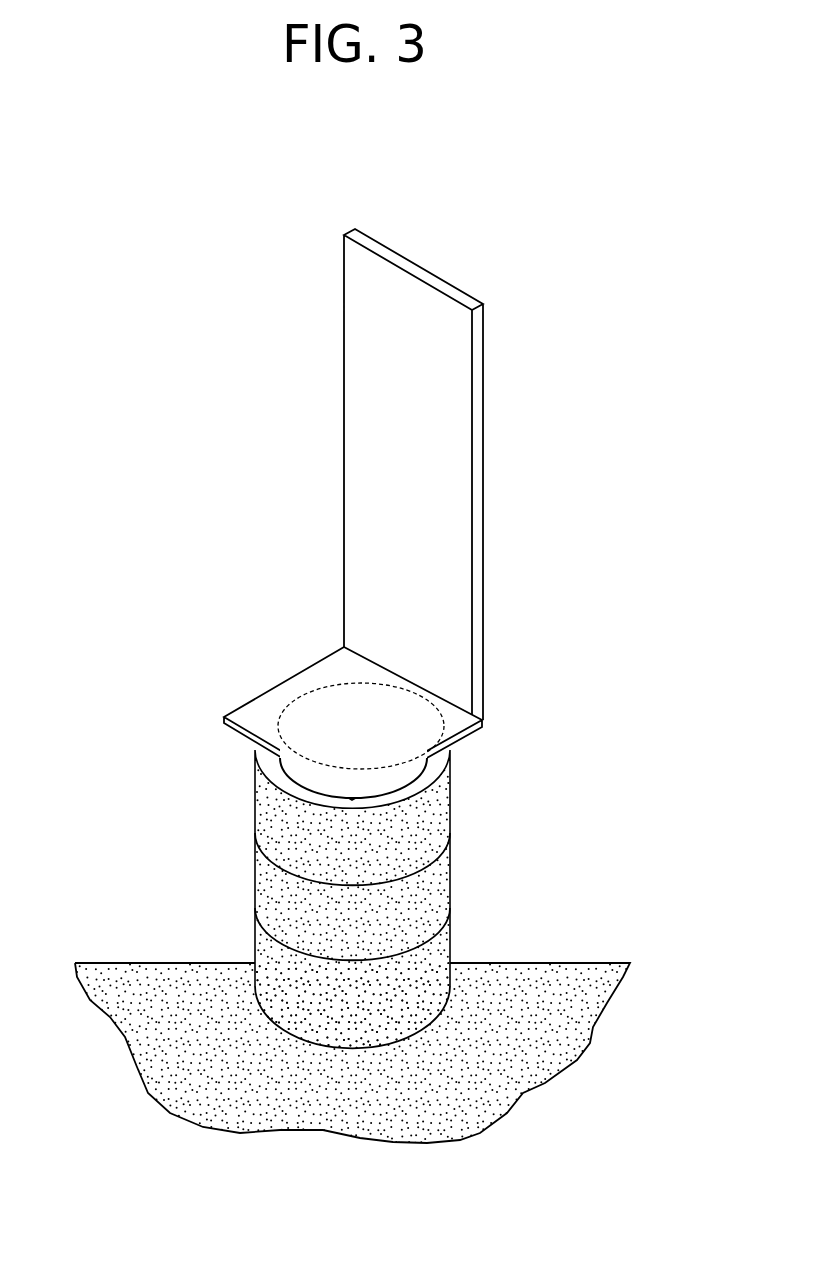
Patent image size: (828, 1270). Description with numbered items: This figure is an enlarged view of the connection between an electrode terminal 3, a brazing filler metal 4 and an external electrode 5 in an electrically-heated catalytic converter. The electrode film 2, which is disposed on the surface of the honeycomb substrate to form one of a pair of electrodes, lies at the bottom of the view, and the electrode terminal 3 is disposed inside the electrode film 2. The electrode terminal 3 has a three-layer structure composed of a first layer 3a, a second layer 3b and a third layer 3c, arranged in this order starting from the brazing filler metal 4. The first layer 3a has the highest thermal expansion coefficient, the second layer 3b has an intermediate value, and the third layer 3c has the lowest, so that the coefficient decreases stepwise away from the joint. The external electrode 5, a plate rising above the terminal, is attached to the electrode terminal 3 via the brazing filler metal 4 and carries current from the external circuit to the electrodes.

The electrode film 2 is at (178, 983).
The electrode terminal 3 is at (408, 899).
The first layer 3a is at (423, 820).
The second layer 3b is at (423, 888).
The third layer 3c is at (390, 978).
The brazing filler metal 4 is at (300, 775).
The external electrode 5 is at (375, 438).